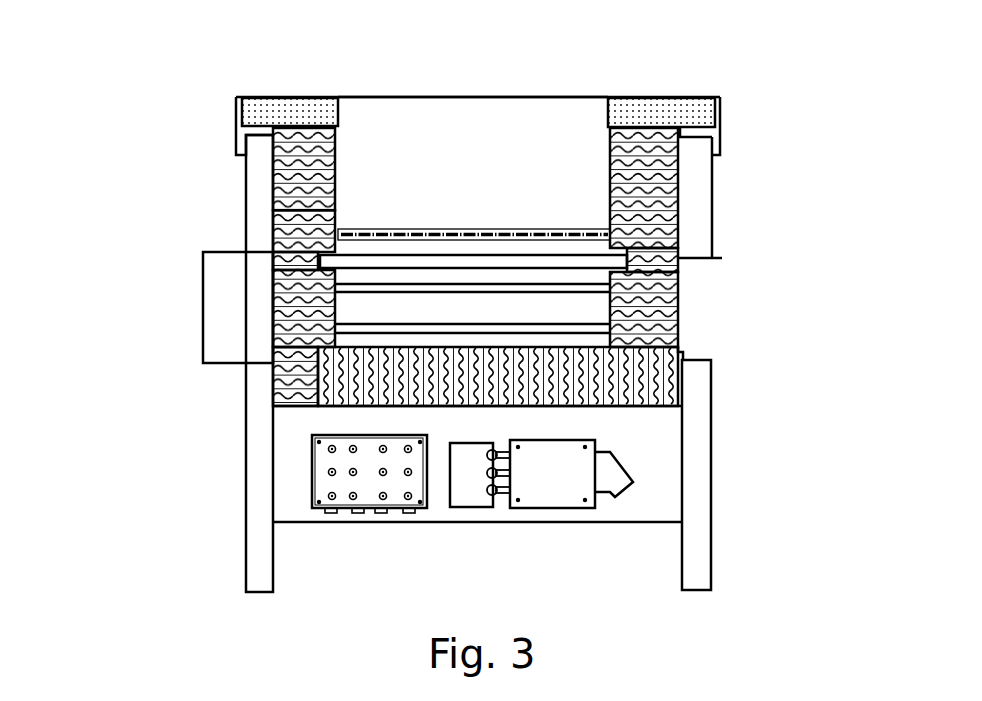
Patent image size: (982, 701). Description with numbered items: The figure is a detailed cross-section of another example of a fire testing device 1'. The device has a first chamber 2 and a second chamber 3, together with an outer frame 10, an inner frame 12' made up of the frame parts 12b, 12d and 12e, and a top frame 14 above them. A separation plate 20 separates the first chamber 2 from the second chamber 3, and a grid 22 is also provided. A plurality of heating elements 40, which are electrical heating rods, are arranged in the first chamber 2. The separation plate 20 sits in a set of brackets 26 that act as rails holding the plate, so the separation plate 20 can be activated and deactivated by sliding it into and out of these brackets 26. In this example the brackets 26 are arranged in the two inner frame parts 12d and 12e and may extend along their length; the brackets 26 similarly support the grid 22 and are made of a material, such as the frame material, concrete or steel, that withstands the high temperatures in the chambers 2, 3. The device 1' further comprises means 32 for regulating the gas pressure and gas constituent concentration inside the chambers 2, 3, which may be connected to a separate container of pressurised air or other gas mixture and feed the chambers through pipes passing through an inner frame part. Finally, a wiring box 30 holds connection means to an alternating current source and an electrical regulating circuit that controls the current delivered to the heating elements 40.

The fire testing device 1' is at (377, 261).
The second chamber 3 is at (428, 137).
The top frame 14 is at (650, 115).
The inner frame part 12e is at (290, 192).
The brackets 26 is at (290, 232).
The inner frame 12' is at (729, 237).
The inner frame part 12d is at (662, 212).
The heating elements 40 is at (370, 327).
The separation plate 20 is at (458, 265).
The grid 22 is at (573, 237).
The first chamber 2 is at (583, 315).
The inner frame part 12b is at (645, 397).
The means for regulating gas pressure and gas constituent concentration 32 is at (345, 483).
The wiring box 30 is at (562, 485).
The outer frame 10 is at (255, 560).